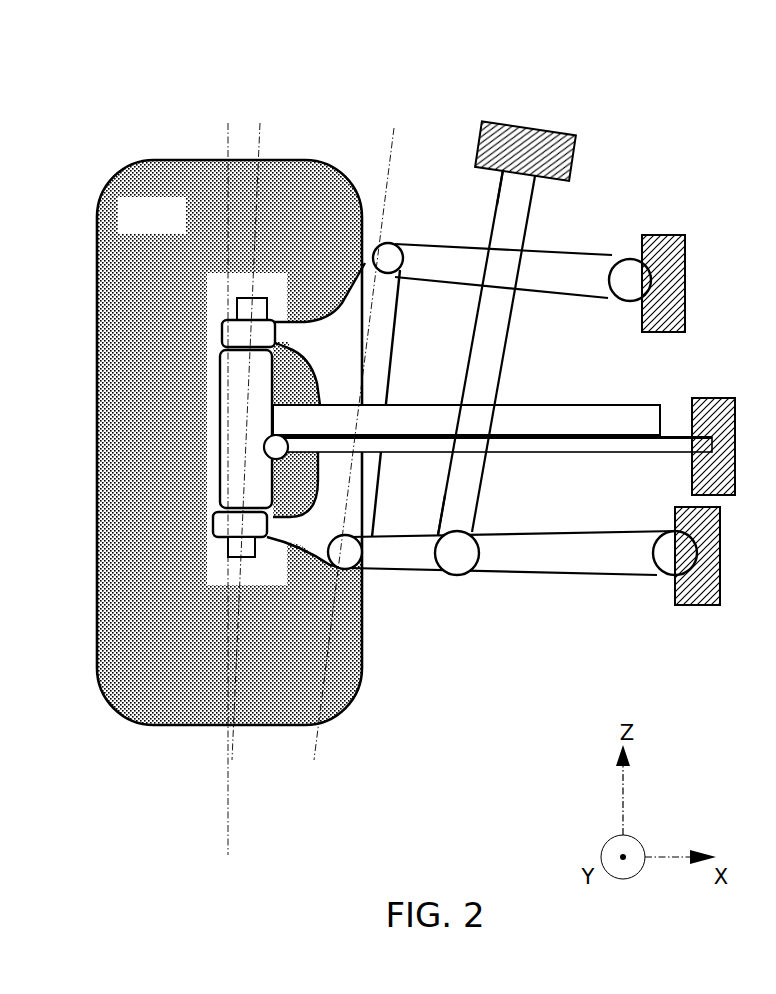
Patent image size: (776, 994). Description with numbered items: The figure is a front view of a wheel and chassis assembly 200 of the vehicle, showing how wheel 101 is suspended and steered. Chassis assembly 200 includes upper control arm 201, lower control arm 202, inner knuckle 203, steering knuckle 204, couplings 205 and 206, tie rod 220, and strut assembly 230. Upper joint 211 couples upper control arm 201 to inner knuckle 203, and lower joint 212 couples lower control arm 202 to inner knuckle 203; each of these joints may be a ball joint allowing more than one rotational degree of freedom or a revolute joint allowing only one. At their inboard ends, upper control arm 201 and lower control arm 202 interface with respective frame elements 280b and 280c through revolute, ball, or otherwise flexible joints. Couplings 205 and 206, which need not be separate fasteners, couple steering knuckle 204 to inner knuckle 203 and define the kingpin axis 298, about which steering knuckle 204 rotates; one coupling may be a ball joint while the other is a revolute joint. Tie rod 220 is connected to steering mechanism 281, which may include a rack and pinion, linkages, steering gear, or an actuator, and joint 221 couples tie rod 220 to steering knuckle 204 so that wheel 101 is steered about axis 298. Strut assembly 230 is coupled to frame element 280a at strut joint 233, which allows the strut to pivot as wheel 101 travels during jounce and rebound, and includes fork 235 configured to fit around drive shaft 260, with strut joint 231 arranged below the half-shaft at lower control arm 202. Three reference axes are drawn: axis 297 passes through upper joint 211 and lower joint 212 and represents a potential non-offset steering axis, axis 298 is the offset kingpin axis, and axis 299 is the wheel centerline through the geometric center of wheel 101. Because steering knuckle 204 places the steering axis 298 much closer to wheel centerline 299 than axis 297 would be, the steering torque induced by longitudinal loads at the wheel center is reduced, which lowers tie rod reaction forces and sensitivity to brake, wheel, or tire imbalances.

The chassis assembly 200 is at (380, 50).
The wheel 101 is at (186, 228).
The inner knuckle 203 is at (353, 361).
The coupling 206 is at (278, 298).
The joint 221 is at (290, 456).
The upper control arm 201 is at (608, 248).
The upper joint 211 is at (397, 291).
The lower control arm 202 is at (588, 577).
The lower joint 212 is at (363, 595).
The strut assembly 230 is at (505, 343).
The strut joint 233 is at (503, 167).
The strut joint 231 is at (453, 580).
The fork 235 is at (480, 477).
The tie rod 220 is at (595, 457).
The drive shaft 260 is at (632, 405).
The frame element 280a is at (520, 118).
The frame element 280b is at (683, 232).
The frame element 280c is at (690, 607).
The steering mechanism 281 is at (722, 395).
The axis 297 is at (374, 429).
The axis 298 is at (260, 430).
The axis 299 is at (215, 478).
The steering knuckle 204 is at (218, 477).
The coupling 205 is at (262, 560).